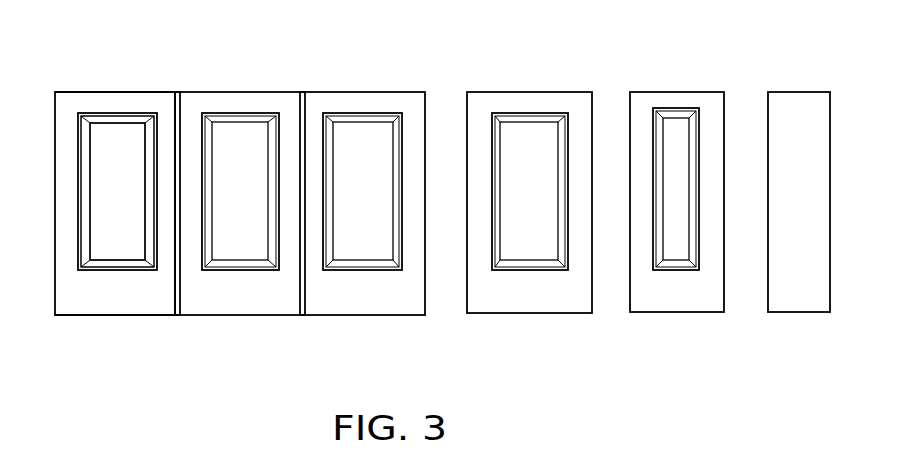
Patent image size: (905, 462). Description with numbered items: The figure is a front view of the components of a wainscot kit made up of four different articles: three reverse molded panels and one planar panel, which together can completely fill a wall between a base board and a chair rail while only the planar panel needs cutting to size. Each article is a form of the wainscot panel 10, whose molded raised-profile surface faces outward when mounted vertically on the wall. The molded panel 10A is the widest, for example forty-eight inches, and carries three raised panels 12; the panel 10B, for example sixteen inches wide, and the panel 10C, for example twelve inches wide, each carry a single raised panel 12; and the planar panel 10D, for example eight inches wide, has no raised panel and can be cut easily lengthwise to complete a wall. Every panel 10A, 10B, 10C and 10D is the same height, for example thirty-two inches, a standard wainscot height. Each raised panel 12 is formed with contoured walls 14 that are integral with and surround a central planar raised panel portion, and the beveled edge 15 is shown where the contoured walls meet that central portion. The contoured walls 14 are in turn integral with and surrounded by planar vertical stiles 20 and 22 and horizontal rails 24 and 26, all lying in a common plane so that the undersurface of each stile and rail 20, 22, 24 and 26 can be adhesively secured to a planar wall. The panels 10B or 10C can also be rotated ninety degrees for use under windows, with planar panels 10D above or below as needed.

The wainscot panel 10 is at (705, 98).
The molded panel 10A is at (233, 103).
The panel 10B is at (543, 102).
The panel 10C is at (681, 169).
The planar panel 10D is at (795, 110).
The raised panel 12 is at (82, 137).
The contoured walls 14 is at (130, 118).
The beveled inner edge 15 is at (147, 112).
The vertical stile 20 is at (75, 202).
The vertical stile 22 is at (165, 177).
The horizontal rail 24 is at (130, 297).
The horizontal rail 26 is at (113, 103).